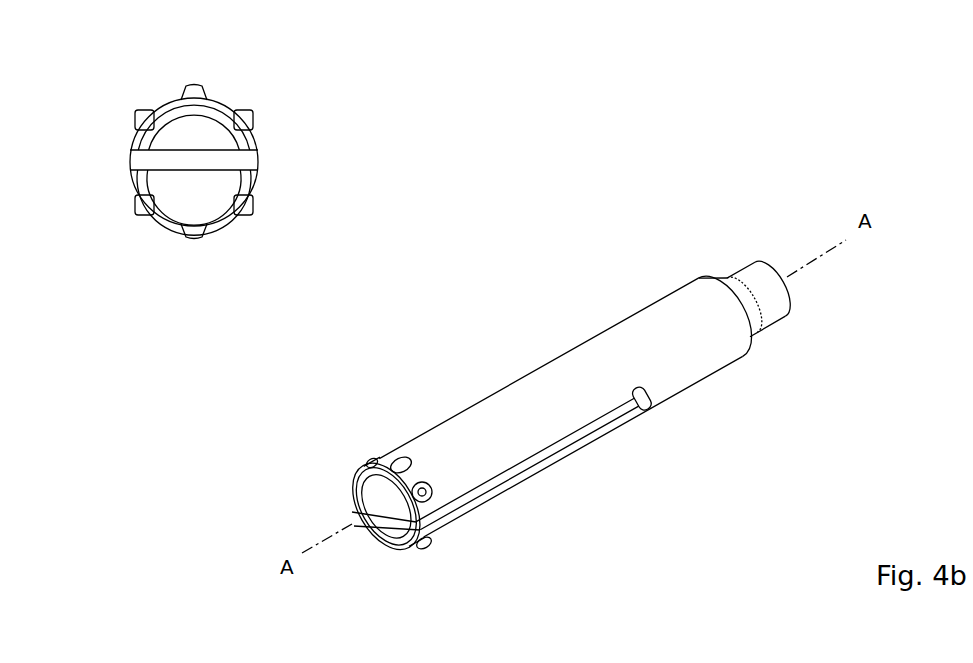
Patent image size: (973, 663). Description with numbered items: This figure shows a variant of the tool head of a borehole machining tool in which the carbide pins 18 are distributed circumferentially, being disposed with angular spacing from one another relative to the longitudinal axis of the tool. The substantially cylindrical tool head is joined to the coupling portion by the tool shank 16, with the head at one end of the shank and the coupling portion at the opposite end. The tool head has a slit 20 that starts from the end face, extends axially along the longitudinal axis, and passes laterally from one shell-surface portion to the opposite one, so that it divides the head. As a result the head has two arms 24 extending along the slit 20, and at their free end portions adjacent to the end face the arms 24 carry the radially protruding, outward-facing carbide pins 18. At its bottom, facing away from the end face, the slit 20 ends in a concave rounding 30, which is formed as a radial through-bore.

The tool shank 16 is at (739, 272).
The carbide pins 18 is at (140, 206).
The slit 20 is at (238, 161).
The arms 24 is at (222, 104).
The concave rounding 30 is at (656, 405).